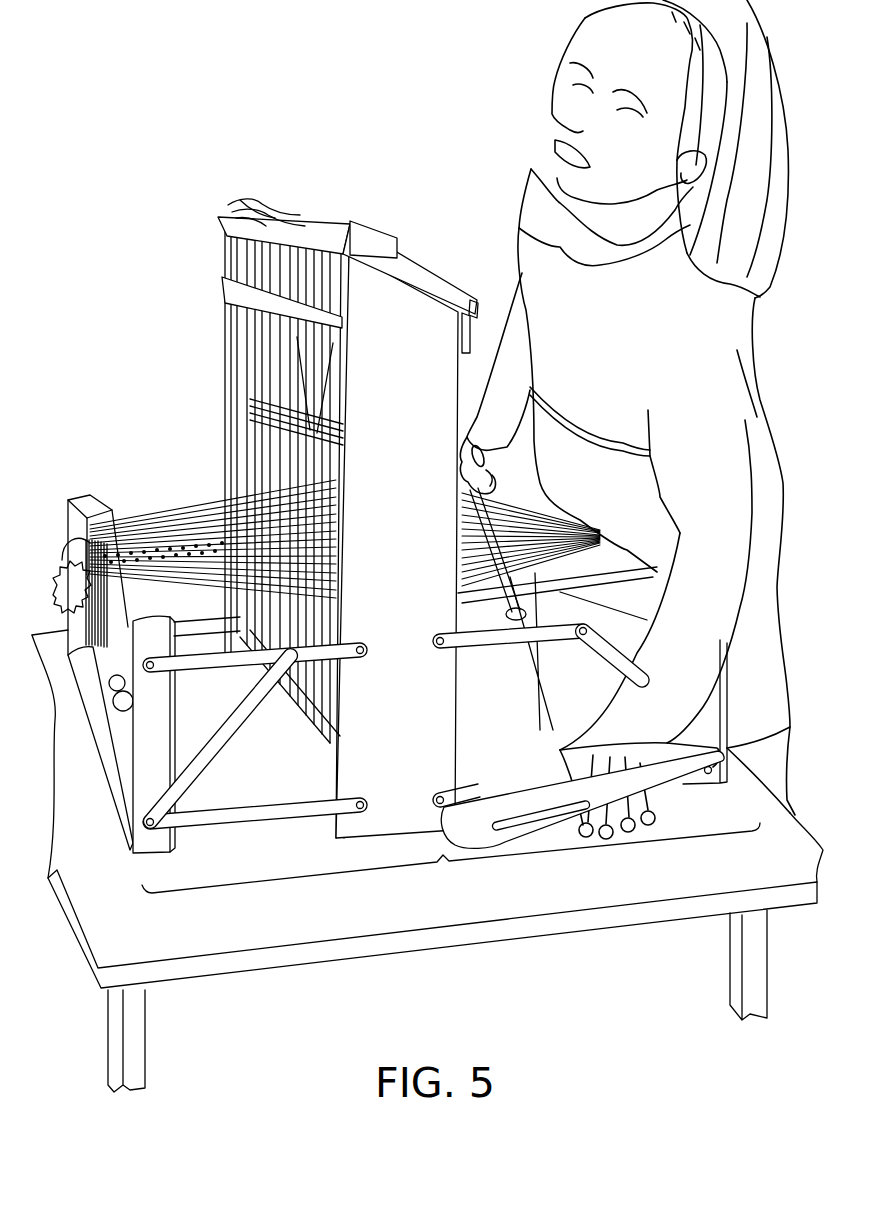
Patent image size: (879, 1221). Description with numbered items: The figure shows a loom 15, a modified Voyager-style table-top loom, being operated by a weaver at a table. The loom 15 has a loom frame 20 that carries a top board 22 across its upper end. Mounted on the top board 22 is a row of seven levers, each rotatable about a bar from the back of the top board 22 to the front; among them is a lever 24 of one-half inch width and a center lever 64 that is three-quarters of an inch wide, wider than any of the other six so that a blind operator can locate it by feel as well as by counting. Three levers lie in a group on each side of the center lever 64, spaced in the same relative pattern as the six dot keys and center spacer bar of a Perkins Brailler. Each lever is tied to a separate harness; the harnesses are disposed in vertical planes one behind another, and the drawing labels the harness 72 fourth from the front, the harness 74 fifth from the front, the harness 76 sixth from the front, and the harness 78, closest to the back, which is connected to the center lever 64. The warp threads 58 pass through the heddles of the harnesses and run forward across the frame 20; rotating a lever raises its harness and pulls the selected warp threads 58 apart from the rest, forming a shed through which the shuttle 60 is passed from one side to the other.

The loom 15 is at (427, 861).
The loom frame 20 is at (228, 250).
The top board 22 is at (222, 216).
The lever 24 is at (447, 270).
The warp threads 58 is at (192, 498).
The shuttle 60 is at (485, 835).
The center lever 64 is at (285, 215).
The harness 72 is at (260, 400).
The harness 74 is at (257, 403).
The harness 76 is at (253, 406).
The harness 78 is at (250, 410).